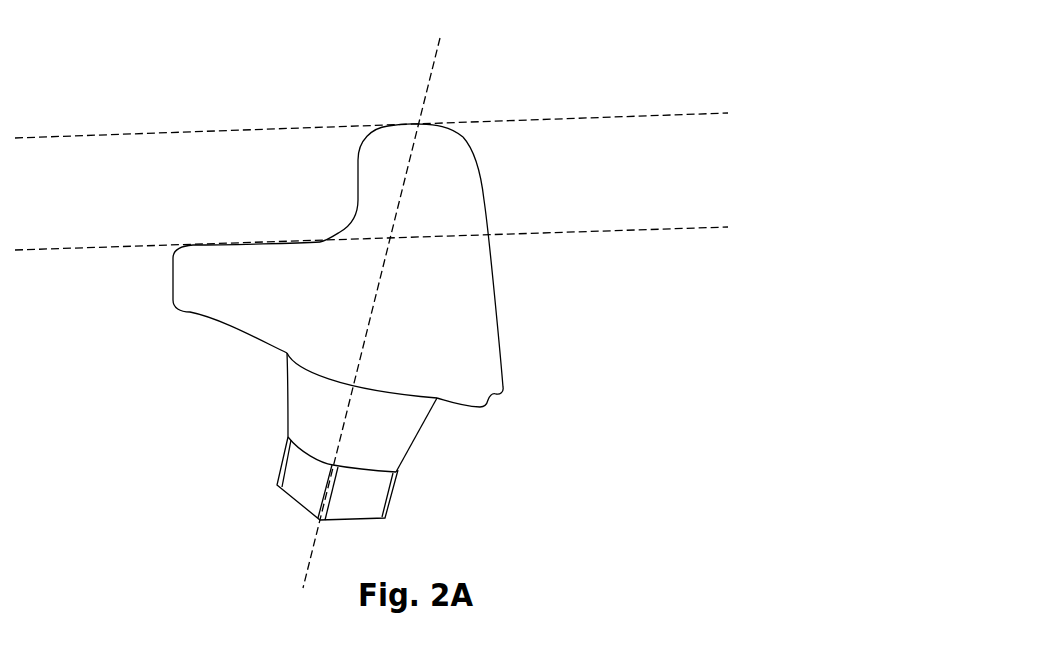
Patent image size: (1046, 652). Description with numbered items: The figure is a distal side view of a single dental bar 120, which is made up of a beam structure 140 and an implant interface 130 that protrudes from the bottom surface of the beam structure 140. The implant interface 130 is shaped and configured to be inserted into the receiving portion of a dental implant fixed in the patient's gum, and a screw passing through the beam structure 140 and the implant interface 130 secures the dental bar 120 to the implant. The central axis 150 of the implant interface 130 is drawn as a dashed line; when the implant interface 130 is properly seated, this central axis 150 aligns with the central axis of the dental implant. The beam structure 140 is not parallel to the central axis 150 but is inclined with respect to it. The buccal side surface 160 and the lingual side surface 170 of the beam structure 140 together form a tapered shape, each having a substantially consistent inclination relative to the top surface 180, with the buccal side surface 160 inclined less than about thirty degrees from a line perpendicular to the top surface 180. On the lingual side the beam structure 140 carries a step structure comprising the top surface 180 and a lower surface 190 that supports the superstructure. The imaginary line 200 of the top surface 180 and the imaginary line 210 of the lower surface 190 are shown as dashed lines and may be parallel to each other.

The dental bar 120 is at (683, 440).
The implant interface 130 is at (271, 460).
The beam structure 140 is at (158, 293).
The central axis 150 is at (463, 26).
The buccal side surface 160 is at (500, 305).
The lingual side surface 170 is at (342, 191).
The top surface 180 is at (447, 116).
The lower surface 190 is at (238, 237).
The imaginary line 200 is at (787, 128).
The imaginary line 210 is at (789, 236).